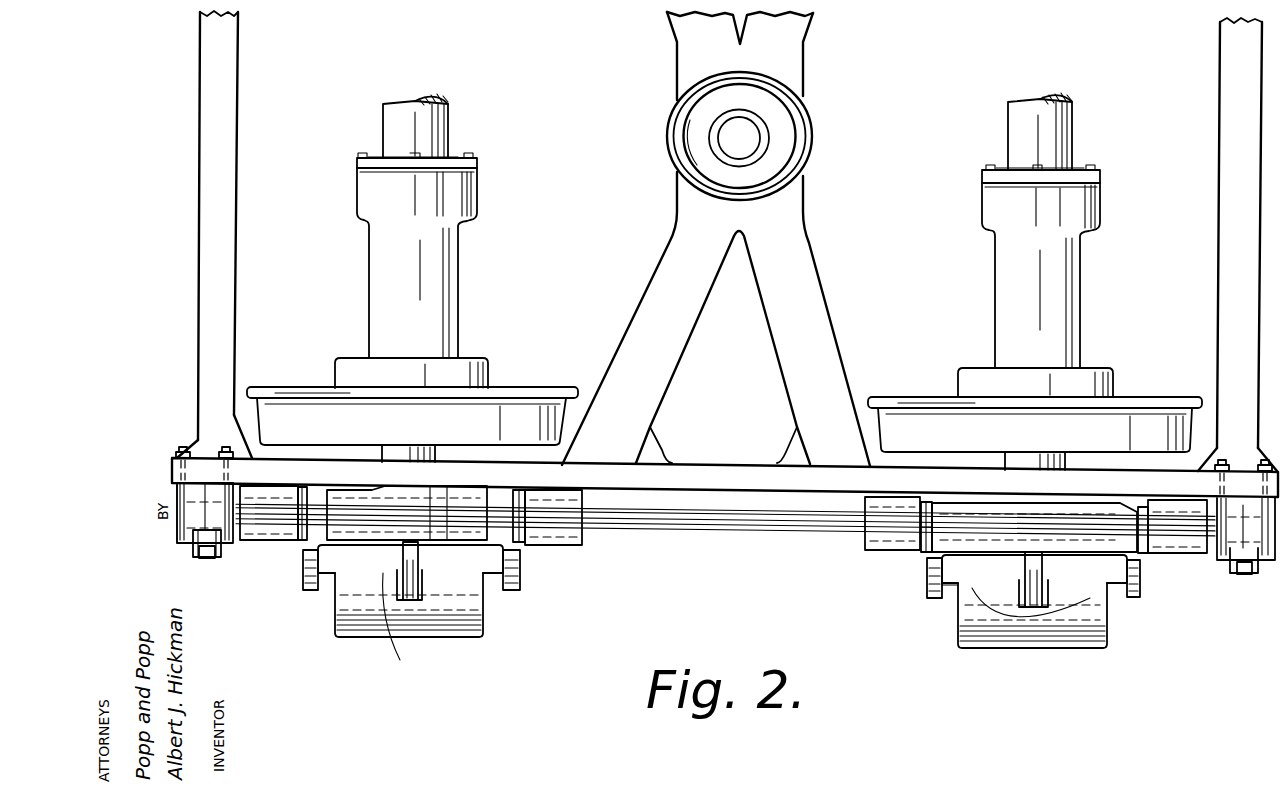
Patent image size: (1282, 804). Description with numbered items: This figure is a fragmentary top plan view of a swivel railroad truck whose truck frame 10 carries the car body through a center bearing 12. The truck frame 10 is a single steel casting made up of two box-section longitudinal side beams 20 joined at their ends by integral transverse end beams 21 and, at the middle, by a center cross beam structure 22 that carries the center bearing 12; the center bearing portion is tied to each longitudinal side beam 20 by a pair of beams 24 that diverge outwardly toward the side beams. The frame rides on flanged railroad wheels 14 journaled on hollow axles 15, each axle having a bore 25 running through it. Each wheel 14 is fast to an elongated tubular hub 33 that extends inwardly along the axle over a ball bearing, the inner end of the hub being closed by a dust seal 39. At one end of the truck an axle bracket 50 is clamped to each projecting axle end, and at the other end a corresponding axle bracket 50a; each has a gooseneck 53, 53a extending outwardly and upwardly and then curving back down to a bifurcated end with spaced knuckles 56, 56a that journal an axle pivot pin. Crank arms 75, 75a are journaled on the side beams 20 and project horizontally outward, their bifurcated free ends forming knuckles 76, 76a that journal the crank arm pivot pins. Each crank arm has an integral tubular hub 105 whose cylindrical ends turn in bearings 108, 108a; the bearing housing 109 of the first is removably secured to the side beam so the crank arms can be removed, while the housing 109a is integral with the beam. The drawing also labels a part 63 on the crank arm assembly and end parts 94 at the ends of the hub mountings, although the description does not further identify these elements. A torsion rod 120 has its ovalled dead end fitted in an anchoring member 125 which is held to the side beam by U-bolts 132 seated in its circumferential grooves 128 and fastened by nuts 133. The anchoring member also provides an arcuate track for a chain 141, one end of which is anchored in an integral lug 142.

The truck frame 10 is at (240, 113).
The center bearing 12 is at (800, 140).
The flanged railroad wheel 14 is at (512, 395).
The axle 15 is at (448, 106).
The longitudinal side beam 20 is at (716, 463).
The transverse end beam 21 is at (200, 50).
The center cross beam structure 22 is at (674, 198).
The diverging beam 24 is at (780, 338).
The axle bore 25 is at (418, 100).
The tubular hub 33 is at (411, 270).
The dust seal 39 is at (1000, 170).
The axle bracket 50 is at (371, 641).
The axle bracket 50a is at (994, 652).
The gooseneck 53 is at (448, 640).
The gooseneck 53a is at (1075, 650).
The knuckle 56 is at (440, 573).
The knuckle 56a is at (972, 588).
The key / lug 63 is at (405, 555).
The crank arm 75 is at (298, 548).
The crank arm 75a is at (924, 556).
The knuckle 76 is at (495, 600).
The knuckle 76a is at (950, 600).
The end cap 94 is at (303, 585).
The tubular hub 105 is at (466, 503).
The bearing 108 is at (296, 487).
The bearing 108a is at (575, 550).
The bearing housing 109 is at (1148, 502).
The bearing housing 109a is at (588, 541).
The torsion rod 120 is at (730, 534).
The anchoring member 125 is at (200, 450).
The circumferential groove 128 is at (1218, 560).
The U-bolt 132 is at (243, 400).
The nut 133 is at (176, 457).
The chain 141 is at (208, 562).
The lug 142 is at (220, 552).